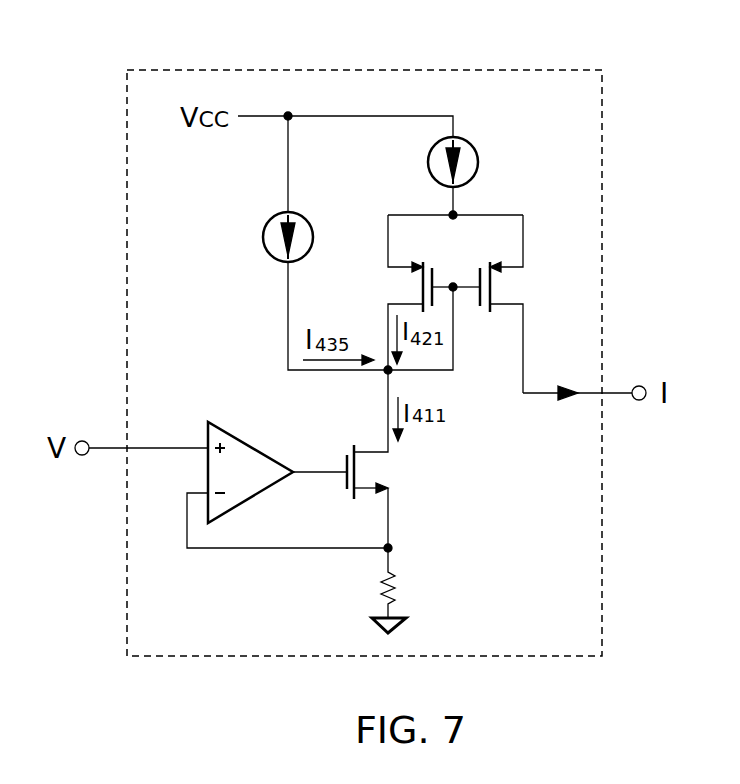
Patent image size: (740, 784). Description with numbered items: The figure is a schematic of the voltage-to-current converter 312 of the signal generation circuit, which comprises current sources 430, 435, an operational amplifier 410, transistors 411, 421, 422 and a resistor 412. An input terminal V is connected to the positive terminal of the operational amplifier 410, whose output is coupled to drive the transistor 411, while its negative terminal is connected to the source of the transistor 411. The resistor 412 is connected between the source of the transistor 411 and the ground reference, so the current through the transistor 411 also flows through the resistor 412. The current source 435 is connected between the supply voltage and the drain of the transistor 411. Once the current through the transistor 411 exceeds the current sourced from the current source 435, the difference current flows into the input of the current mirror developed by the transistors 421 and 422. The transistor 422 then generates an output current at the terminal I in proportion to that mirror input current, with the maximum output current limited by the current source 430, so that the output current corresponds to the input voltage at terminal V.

The voltage-to-current converter 312 is at (527, 70).
The operational amplifier 410 is at (243, 442).
The transistor 411 is at (392, 468).
The resistor 412 is at (403, 587).
The transistor 421 is at (385, 287).
The transistor 422 is at (527, 290).
The current source 430 is at (482, 168).
The current source 435 is at (257, 240).